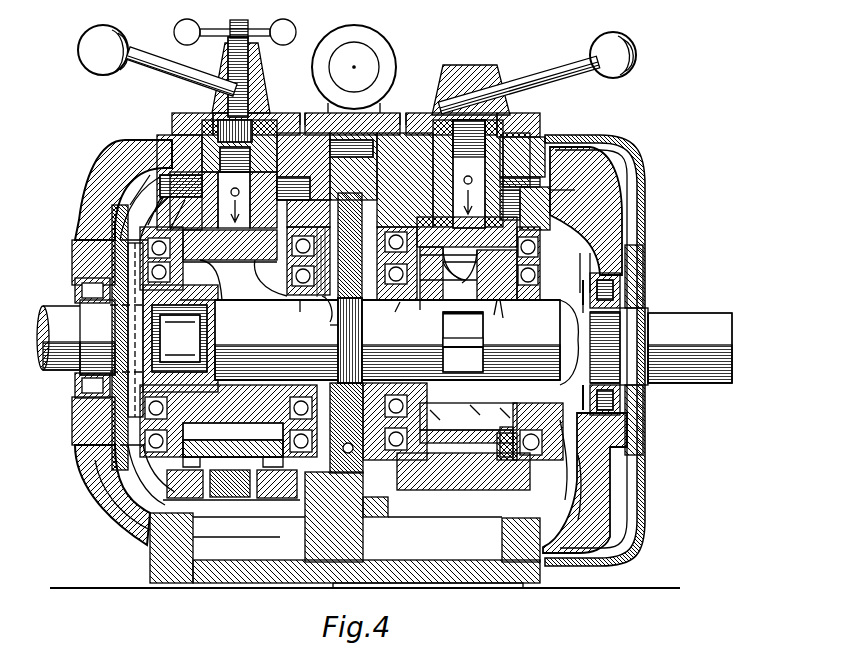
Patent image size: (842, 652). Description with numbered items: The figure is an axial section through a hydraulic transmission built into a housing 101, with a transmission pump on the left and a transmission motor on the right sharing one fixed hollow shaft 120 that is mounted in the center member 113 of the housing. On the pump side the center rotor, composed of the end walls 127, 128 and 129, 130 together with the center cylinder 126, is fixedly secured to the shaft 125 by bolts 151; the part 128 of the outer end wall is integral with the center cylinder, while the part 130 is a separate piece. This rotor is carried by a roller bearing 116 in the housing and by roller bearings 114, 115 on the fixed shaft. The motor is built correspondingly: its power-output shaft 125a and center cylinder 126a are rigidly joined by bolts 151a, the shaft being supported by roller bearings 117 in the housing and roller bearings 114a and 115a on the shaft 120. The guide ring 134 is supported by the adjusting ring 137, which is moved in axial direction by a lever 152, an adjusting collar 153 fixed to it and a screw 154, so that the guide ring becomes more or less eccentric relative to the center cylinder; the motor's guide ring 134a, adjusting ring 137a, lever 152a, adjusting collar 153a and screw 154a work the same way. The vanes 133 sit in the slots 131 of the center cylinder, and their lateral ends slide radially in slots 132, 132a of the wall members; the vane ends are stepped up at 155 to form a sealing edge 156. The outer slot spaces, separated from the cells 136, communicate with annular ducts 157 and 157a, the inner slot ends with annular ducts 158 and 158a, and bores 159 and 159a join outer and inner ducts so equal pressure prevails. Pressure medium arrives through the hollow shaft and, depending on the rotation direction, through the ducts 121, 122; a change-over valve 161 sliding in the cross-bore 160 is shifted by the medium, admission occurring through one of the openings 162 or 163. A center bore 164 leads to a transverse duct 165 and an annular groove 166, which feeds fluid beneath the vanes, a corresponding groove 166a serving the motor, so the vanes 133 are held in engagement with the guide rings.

The housing 101 is at (160, 557).
The center member 113 is at (382, 133).
The roller bearing 114 is at (75, 252).
The roller bearing 114a is at (530, 300).
The roller bearing 115 is at (283, 297).
The roller bearing 115a is at (420, 314).
The roller bearing 116 is at (75, 410).
The roller bearing 117 is at (605, 292).
The fixed shaft 120 is at (455, 425).
The duct 121 is at (92, 470).
The duct 122 is at (338, 337).
The shaft 125 is at (60, 338).
The power-output shaft 125a is at (700, 322).
The center cylinder 126 is at (135, 238).
The center cylinder 126a is at (622, 250).
The end wall 127 is at (145, 218).
The outer end wall part 128 is at (150, 203).
The end wall 129 is at (323, 309).
The end wall part 130 is at (310, 316).
The slots 131 is at (490, 455).
The slots 132 is at (420, 462).
The slots 132a is at (592, 490).
The vanes 133 is at (470, 442).
The guide ring 134 is at (148, 190).
The guide ring 134a is at (600, 190).
The cells 136 is at (640, 198).
The adjusting ring 137 is at (150, 168).
The adjusting ring 137a is at (548, 140).
The bolts 151 is at (345, 318).
The bolts 151a is at (385, 313).
The lever 152 is at (147, 58).
The lever 152a is at (548, 68).
The adjusting collar 153 is at (212, 100).
The adjusting collar 153a is at (488, 74).
The screw 154 is at (172, 130).
The screw 154a is at (462, 110).
The stepped-up vane end 155 is at (602, 455).
The sealing edge 156 is at (612, 528).
The annular duct 157 is at (420, 253).
The annular duct 157a is at (600, 470).
The annular duct 158 is at (447, 281).
The annular duct 158a is at (592, 452).
The bores 159 is at (446, 263).
The bores 159a is at (615, 222).
The cross-bore 160 is at (78, 380).
The change-over valve 161 is at (80, 305).
The opening 162 is at (97, 505).
The opening 163 is at (240, 307).
The center bore 164 is at (96, 328).
The transverse duct 165 is at (160, 345).
The annular groove 166 is at (216, 275).
The annular groove 166a is at (497, 305).